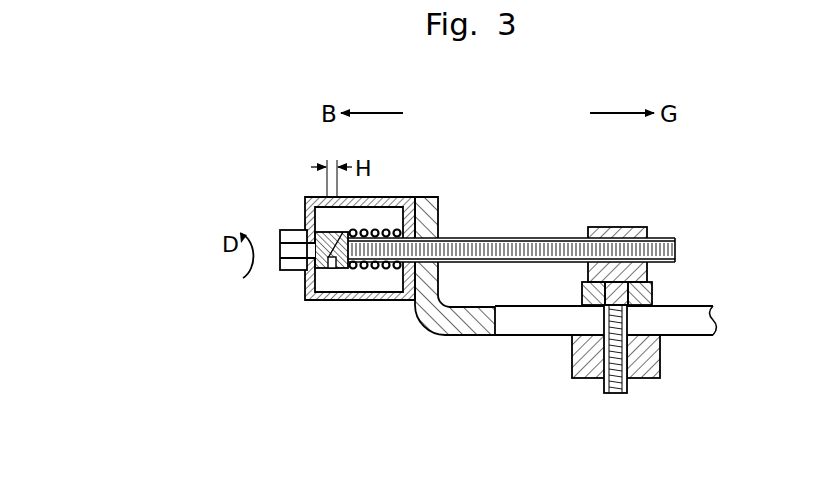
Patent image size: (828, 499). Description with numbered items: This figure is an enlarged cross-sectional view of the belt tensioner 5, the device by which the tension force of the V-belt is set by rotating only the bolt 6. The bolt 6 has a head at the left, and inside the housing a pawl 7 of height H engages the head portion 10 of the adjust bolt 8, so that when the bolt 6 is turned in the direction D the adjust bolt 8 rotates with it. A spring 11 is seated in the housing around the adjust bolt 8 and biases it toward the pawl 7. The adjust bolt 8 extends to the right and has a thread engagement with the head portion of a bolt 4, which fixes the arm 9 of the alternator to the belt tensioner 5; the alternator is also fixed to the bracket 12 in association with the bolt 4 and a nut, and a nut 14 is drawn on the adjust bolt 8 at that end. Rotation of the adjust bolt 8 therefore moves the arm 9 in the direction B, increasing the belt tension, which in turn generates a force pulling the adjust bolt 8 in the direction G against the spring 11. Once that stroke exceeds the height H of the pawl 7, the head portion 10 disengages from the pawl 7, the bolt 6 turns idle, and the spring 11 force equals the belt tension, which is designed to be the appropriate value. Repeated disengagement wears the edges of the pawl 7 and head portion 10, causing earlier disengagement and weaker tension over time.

The bolt 4 is at (629, 397).
The belt tensioner 5 is at (562, 198).
The bolt 6 is at (288, 272).
The pawl 7 is at (333, 269).
The adjust bolt 8 is at (501, 236).
The arm 9 is at (661, 364).
The head portion 10 is at (337, 267).
The spring 11 is at (381, 270).
The bracket 12 is at (470, 337).
The nut 14 is at (645, 227).